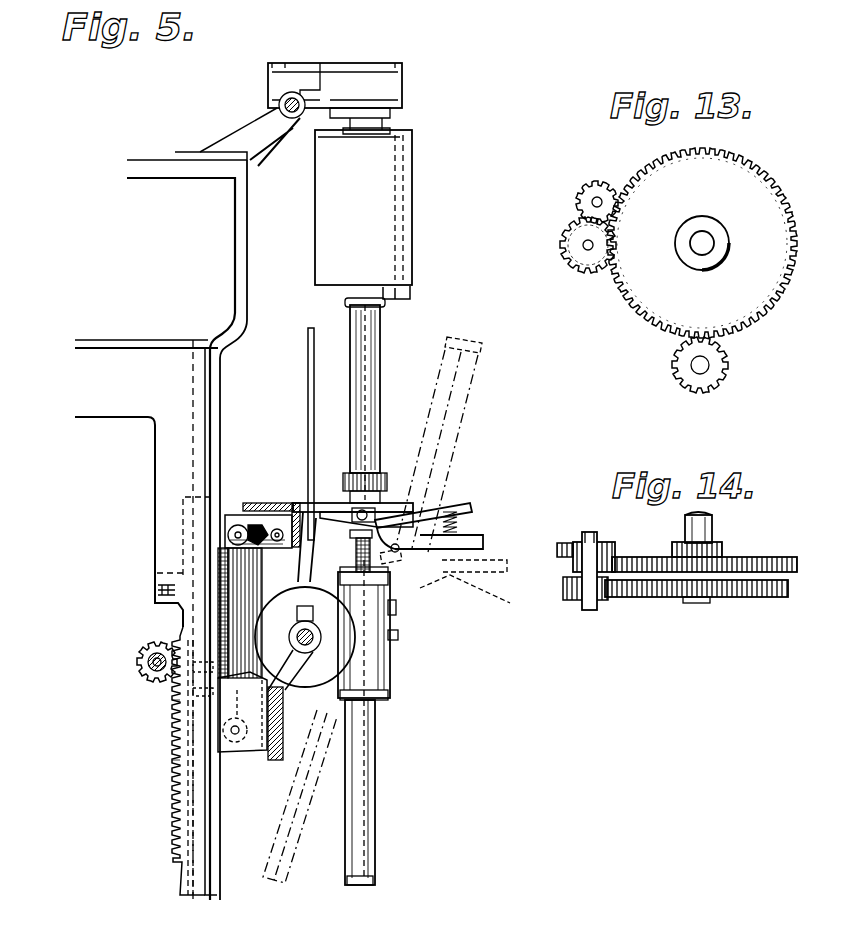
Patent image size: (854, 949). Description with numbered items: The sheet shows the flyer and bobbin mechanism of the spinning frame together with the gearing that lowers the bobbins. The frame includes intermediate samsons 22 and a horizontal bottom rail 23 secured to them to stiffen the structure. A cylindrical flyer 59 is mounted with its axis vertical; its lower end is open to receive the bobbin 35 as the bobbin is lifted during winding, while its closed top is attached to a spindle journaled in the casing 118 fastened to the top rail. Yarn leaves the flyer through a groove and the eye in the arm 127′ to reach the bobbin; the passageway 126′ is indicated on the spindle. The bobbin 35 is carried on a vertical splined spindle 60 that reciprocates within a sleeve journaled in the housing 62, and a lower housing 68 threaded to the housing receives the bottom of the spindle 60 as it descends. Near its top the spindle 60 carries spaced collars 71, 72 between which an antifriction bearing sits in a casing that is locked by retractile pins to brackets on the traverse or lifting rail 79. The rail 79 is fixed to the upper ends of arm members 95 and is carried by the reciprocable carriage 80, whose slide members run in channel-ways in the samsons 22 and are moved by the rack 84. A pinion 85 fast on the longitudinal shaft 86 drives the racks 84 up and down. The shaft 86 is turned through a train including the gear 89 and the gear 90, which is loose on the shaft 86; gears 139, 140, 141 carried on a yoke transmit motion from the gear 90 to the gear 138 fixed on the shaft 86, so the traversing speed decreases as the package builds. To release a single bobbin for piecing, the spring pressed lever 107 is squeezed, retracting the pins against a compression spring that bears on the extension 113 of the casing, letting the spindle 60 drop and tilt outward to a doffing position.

In FIG. 5, the samsons 22 is at (128, 416).
In FIG. 5, the bottom rail 23 is at (278, 757).
In FIG. 5, the bobbin 35 is at (380, 403).
In FIG. 5, the flyer 59 is at (393, 203).
In FIG. 5, the bobbin spindle 60 is at (446, 562).
In FIG. 5, the housing 62 is at (388, 664).
In FIG. 5, the housing 68 is at (375, 803).
In FIG. 5, the collar 71 is at (383, 503).
In FIG. 5, the collar 72 is at (335, 547).
In FIG. 5, the traverse or lifting rail 79 is at (265, 503).
In FIG. 5, the carriage 80 is at (217, 830).
In FIG. 5, the rack 84 is at (173, 856).
In FIG. 5, the pinion 85 is at (148, 680).
In FIG. 5, the shaft 86 is at (146, 652).
In FIG. 14, the shaft 86 is at (712, 525).
In FIG. 13, the gear 89 is at (717, 377).
In FIG. 13, the gear 90 is at (760, 317).
In FIG. 14, the gear 90 is at (760, 557).
In FIG. 5, the arm member 95 is at (310, 688).
In FIG. 5, the spring pressed lever 107 is at (428, 520).
In FIG. 5, the extension 113 is at (462, 543).
In FIG. 5, the casing 118 is at (377, 80).
In FIG. 5, the piston 126′ is at (410, 240).
In FIG. 5, the arm 127′ is at (408, 298).
In FIG. 13, the gear 138 is at (657, 298).
In FIG. 14, the gear 138 is at (753, 597).
In FIG. 13, the gear 139 is at (611, 188).
In FIG. 14, the gear 139 is at (610, 545).
In FIG. 13, the gear 140 is at (576, 231).
In FIG. 14, the gear 140 is at (573, 540).
In FIG. 13, the gear 141 is at (583, 256).
In FIG. 14, the gear 141 is at (566, 597).